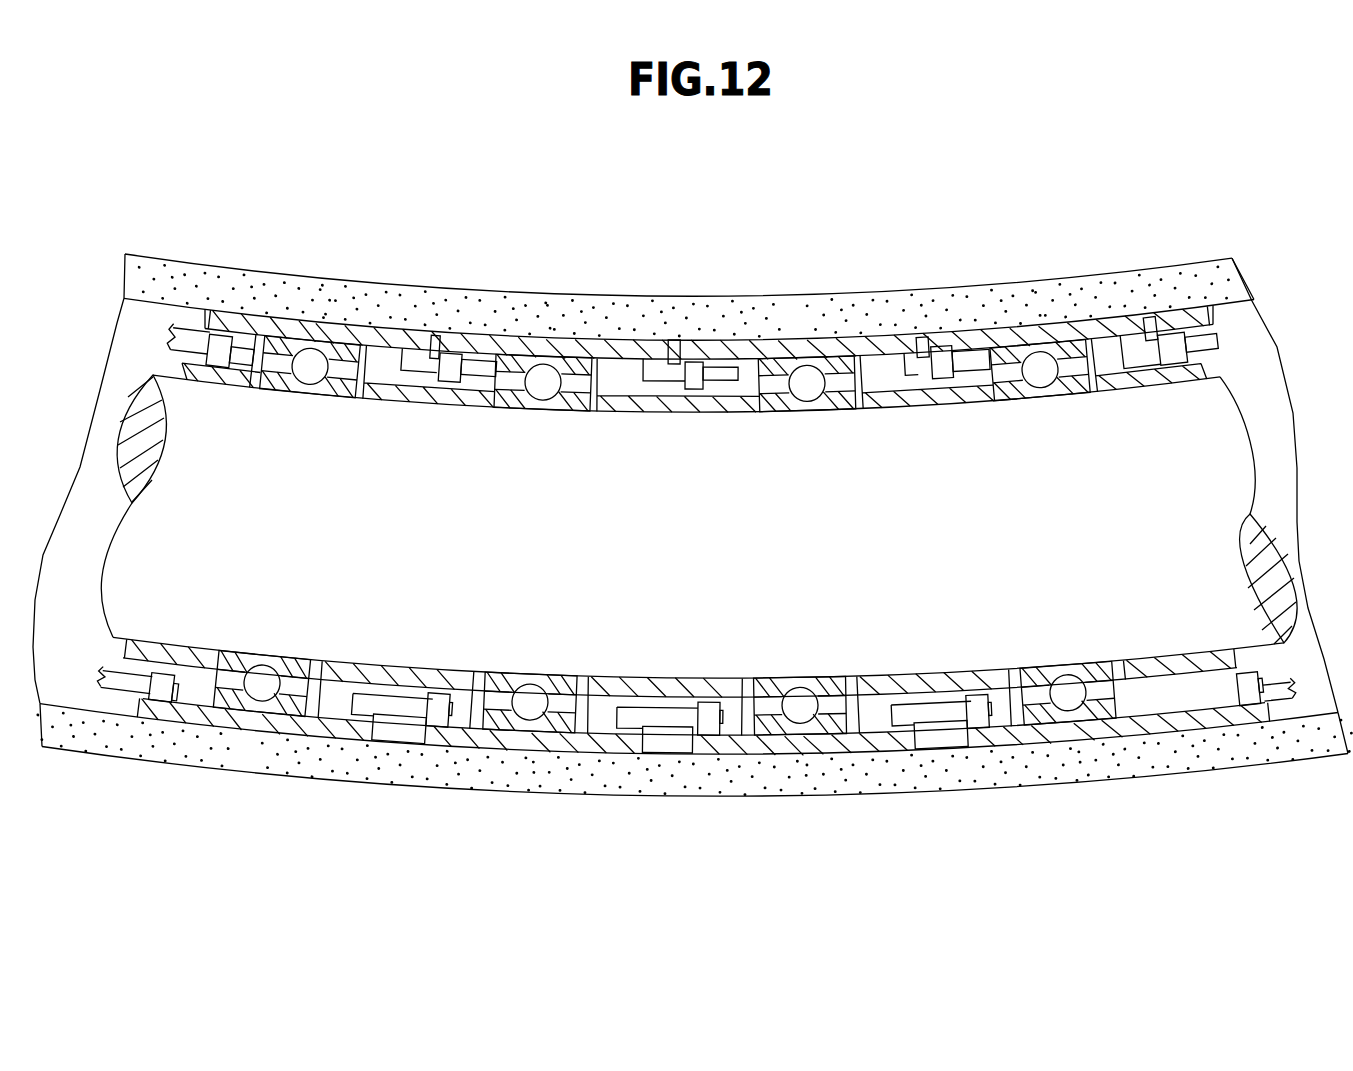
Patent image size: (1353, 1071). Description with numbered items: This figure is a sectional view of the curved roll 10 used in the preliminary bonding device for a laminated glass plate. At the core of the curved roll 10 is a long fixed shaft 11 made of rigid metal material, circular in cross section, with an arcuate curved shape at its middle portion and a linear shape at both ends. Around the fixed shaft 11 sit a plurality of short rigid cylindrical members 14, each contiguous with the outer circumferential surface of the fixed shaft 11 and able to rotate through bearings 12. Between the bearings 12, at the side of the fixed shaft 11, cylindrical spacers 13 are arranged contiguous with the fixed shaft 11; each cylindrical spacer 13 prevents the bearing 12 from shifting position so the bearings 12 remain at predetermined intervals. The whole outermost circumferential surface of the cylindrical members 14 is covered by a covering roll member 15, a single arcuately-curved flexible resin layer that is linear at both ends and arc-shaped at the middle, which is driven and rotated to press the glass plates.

The curved roll 10 is at (858, 262).
The fixed shaft 11 is at (921, 490).
The bearing 12 is at (321, 392).
The cylindrical spacer 13 is at (423, 392).
The cylindrical member 14 is at (511, 345).
The covering roll member 15 is at (369, 306).